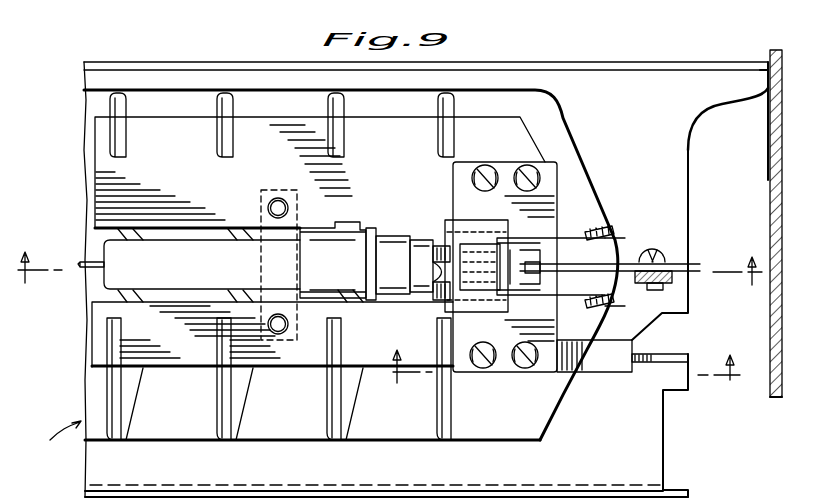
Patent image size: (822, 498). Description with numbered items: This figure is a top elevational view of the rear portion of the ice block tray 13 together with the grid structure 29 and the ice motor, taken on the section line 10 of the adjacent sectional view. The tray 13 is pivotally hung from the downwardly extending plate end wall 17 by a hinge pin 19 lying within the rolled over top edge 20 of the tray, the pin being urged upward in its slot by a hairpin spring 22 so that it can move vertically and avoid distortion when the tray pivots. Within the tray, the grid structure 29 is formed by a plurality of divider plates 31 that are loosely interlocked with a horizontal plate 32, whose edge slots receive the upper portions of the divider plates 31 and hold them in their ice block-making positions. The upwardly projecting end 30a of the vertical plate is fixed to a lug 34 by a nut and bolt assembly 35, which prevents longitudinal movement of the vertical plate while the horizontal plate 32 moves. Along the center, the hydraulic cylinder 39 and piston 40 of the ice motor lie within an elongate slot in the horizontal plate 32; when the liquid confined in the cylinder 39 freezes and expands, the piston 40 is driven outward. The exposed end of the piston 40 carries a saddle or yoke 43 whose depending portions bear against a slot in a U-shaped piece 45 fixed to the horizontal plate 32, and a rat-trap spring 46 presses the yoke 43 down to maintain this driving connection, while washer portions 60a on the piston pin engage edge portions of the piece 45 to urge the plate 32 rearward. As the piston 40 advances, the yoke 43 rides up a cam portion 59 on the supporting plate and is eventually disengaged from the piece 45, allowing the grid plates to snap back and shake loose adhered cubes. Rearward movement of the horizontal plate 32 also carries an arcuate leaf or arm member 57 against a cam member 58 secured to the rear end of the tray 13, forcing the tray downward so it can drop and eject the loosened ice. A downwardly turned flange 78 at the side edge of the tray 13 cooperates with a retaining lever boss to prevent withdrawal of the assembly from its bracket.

The section line 10— 10 is at (386, 260).
The ice block tray 13 is at (388, 404).
The plate end wall 17 is at (775, 398).
The pin 19 is at (770, 88).
The rolled over top edge 20 is at (571, 70).
The hairpin spring 22 is at (769, 141).
The grid structure 29 is at (92, 374).
The upwardly projecting end of vertical plate 30a is at (692, 262).
The divider plate 31 is at (333, 405).
The horizontal plate 32 is at (181, 362).
The lug 34 is at (672, 276).
The nut and bolt assembly 35 is at (680, 292).
The hydraulic cylinder 39 is at (266, 228).
The piston 40 is at (433, 262).
The saddle or yoke 43 is at (478, 255).
The U-shaped piece 45 is at (553, 165).
The rat-trap spring 46 is at (603, 228).
The arcuate leaf or arm member 57 is at (604, 372).
The cam member 58 is at (648, 363).
The cam portion 59 is at (565, 262).
The washer portion 60a is at (440, 228).
The downwardly turned flange 78 is at (538, 487).